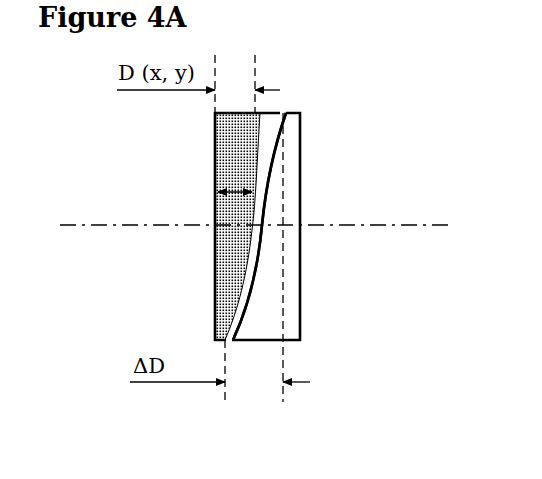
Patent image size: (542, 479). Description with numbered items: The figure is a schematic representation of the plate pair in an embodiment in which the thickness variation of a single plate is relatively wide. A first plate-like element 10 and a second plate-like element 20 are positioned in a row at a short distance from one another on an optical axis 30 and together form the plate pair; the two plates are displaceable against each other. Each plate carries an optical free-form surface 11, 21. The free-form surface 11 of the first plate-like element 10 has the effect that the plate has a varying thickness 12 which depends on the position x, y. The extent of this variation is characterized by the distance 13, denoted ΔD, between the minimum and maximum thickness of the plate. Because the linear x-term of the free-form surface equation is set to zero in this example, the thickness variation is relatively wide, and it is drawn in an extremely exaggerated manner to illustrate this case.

The first plate-like element 10 is at (212, 267).
The optical free-form surface 11 is at (248, 302).
The varying thickness 12 is at (152, 98).
The distance between minimum and maximum thickness 13 is at (148, 389).
The second plate-like element 20 is at (304, 263).
The optical free-form surface 21 is at (263, 243).
The optical axis 30 is at (410, 230).